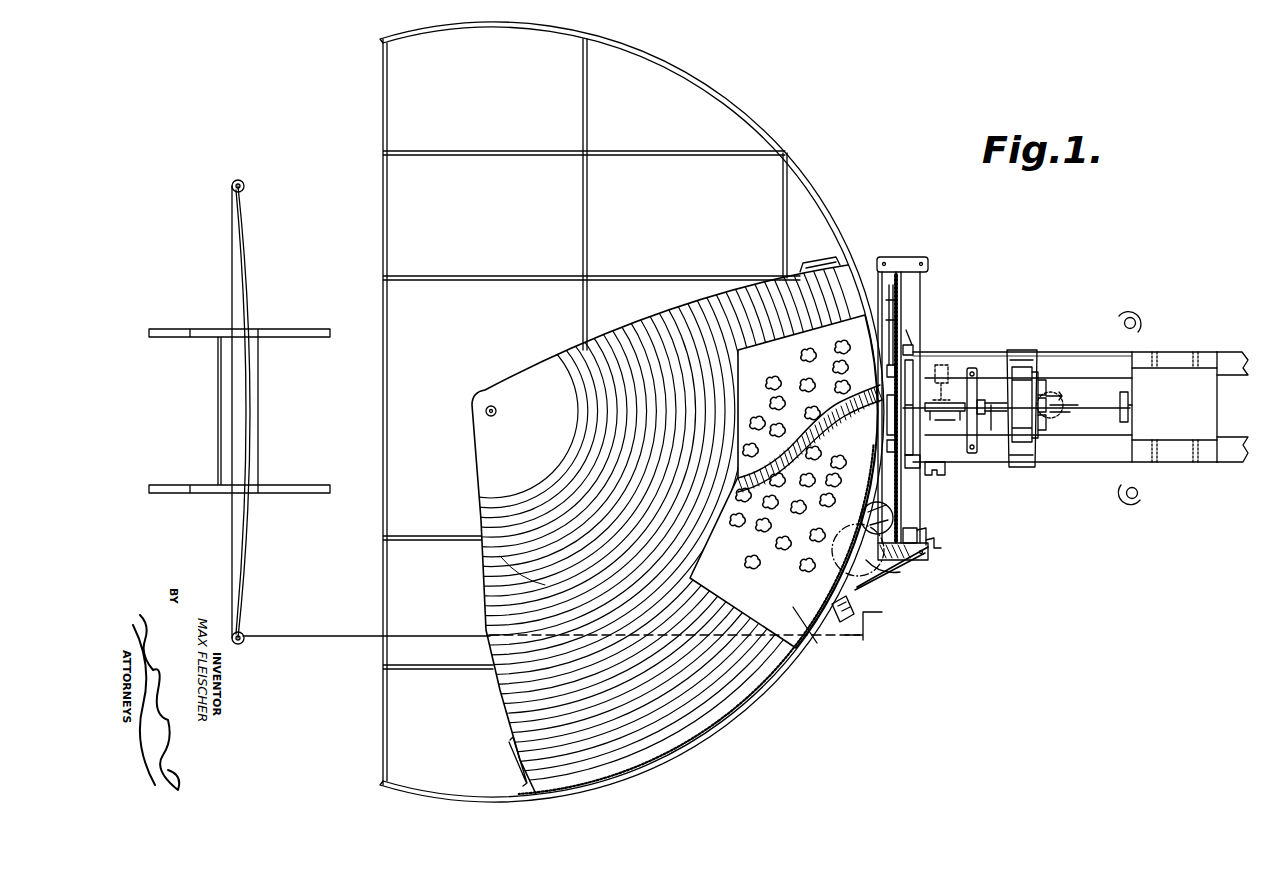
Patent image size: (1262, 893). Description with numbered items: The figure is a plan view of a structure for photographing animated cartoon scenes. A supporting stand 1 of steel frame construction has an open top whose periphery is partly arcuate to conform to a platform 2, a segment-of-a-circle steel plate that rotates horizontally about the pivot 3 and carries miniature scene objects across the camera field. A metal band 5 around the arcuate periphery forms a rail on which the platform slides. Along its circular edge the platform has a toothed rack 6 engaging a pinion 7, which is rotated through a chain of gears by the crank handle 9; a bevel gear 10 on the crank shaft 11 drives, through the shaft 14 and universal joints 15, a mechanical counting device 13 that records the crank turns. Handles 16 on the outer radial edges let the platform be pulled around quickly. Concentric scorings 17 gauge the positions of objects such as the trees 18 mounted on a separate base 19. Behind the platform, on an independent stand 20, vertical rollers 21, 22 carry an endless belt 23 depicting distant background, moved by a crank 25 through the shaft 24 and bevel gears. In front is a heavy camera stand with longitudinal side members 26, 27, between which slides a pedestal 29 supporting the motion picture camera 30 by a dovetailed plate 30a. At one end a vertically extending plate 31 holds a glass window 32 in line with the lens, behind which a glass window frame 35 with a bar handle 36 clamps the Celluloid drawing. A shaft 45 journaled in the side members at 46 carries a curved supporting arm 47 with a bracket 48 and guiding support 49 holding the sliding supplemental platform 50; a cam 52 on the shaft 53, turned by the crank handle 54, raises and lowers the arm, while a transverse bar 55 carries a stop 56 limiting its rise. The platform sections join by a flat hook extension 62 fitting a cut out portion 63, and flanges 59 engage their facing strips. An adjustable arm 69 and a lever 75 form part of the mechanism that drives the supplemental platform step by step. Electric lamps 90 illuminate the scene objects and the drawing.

The supporting stand 1 is at (373, 240).
The platform 2 is at (483, 598).
The pivot 3 is at (486, 412).
The metal band 5 is at (768, 126).
The toothed rack 6 is at (778, 680).
The pinion 7 is at (892, 512).
The crank handle 9 is at (941, 546).
The bevel gear 10 is at (917, 535).
The crank shaft 11 is at (928, 532).
The mechanical counting device 13 is at (845, 624).
The shaft 14 is at (893, 575).
The universal joints 15 is at (905, 565).
The handles 16 is at (827, 262).
The concentric scorings 17 is at (527, 580).
The trees 18 is at (800, 353).
The base 19 is at (817, 643).
The stand 20 is at (282, 497).
The vertical roller 21 is at (236, 645).
The vertical roller 22 is at (244, 185).
The endless belt 23 is at (252, 398).
The shaft 24 is at (316, 638).
The crank 25 is at (868, 625).
The longitudinal side member 26 is at (1090, 448).
The longitudinal side member 27 is at (1075, 352).
The pedestal 29 is at (1225, 352).
The motion picture camera 30 is at (1205, 400).
The plate 30a is at (1193, 462).
The vertically extending plate 31 is at (903, 292).
The glass window 32 is at (913, 420).
The glass window frame 35 is at (910, 347).
The bar handle 36 is at (920, 460).
The shaft 45 is at (888, 427).
The journal 46 is at (887, 371).
The curved supporting arm 47 is at (992, 425).
The bracket 48 is at (1022, 470).
The guiding support 49 is at (1034, 372).
The supplemental platform 50 is at (1020, 368).
The cam 52 is at (948, 403).
The shaft 53 is at (930, 385).
The crank handle 54 is at (945, 472).
The transverse bar 55 is at (979, 364).
The stop 56 is at (983, 390).
The flanges 59 is at (1045, 398).
The flat hook extension 62 is at (1042, 380).
The cut out portion 63 is at (1044, 430).
The arm 69 is at (1063, 396).
The lever 75 is at (1072, 412).
The electric lamps 90 is at (1144, 323).